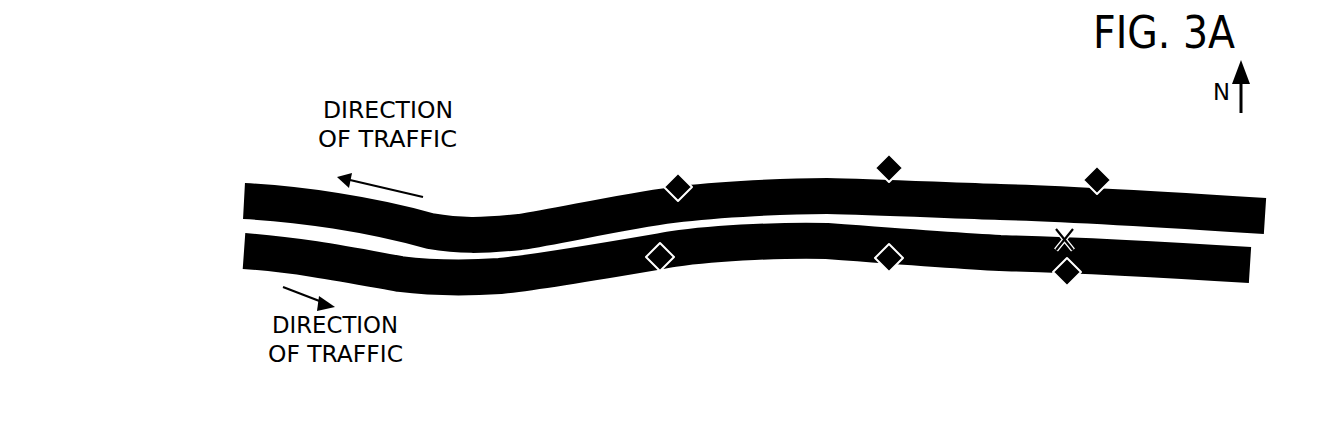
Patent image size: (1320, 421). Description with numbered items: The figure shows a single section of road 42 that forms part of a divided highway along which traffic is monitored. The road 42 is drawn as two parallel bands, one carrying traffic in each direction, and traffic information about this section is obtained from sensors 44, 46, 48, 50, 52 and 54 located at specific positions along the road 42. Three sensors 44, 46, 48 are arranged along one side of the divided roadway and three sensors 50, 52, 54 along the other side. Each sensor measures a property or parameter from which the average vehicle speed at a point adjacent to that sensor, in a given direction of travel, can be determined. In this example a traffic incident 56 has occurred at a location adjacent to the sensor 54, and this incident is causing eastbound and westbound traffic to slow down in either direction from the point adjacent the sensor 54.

The road 42 is at (298, 170).
The sensor 44 is at (662, 150).
The sensor 46 is at (890, 140).
The sensor 48 is at (1117, 141).
The sensor 50 is at (663, 305).
The sensor 52 is at (885, 295).
The sensor 54 is at (1042, 322).
The incident 56 is at (1080, 232).